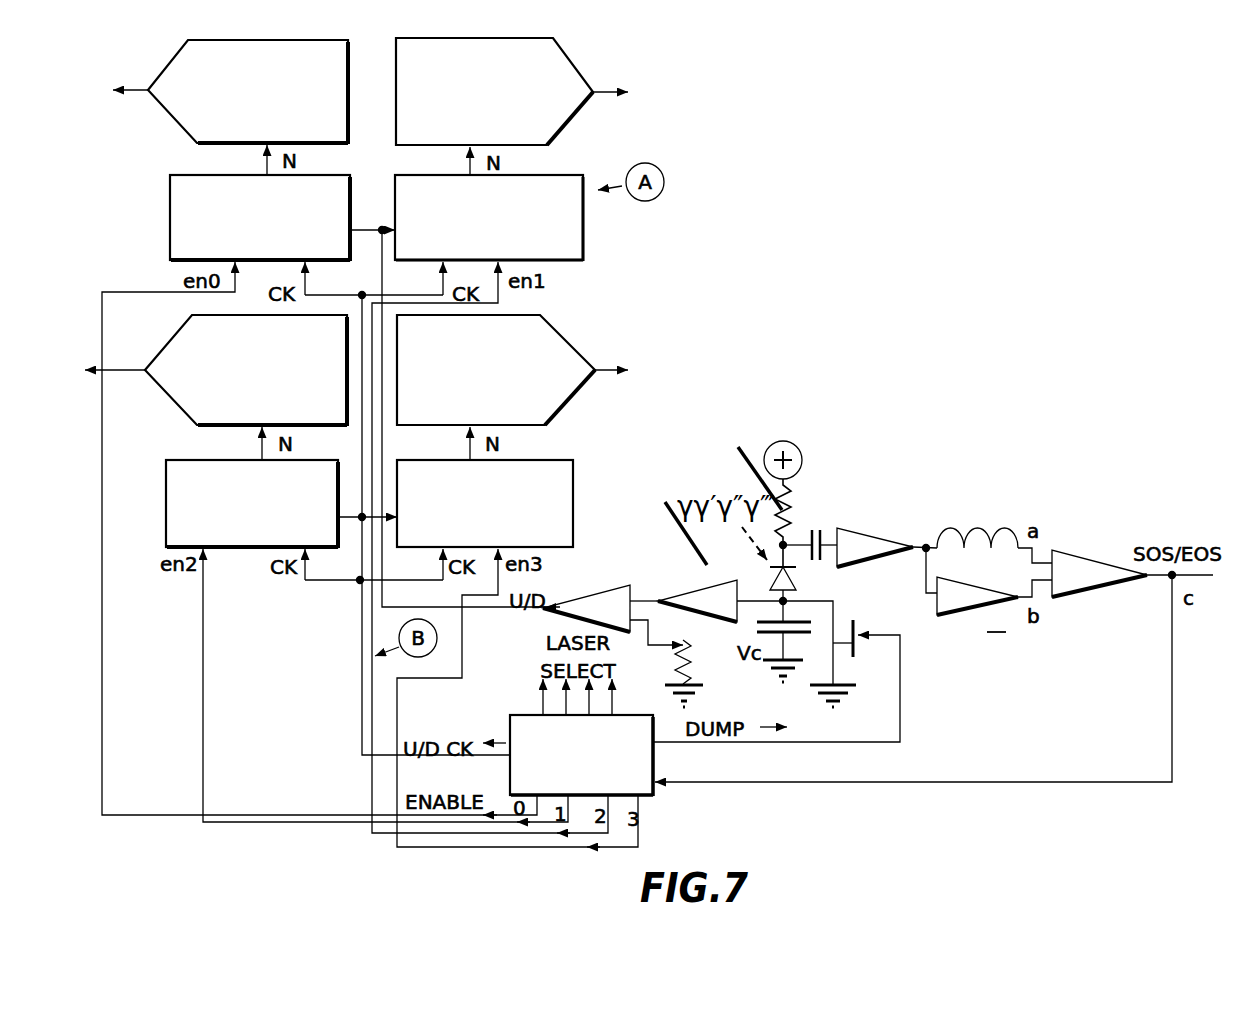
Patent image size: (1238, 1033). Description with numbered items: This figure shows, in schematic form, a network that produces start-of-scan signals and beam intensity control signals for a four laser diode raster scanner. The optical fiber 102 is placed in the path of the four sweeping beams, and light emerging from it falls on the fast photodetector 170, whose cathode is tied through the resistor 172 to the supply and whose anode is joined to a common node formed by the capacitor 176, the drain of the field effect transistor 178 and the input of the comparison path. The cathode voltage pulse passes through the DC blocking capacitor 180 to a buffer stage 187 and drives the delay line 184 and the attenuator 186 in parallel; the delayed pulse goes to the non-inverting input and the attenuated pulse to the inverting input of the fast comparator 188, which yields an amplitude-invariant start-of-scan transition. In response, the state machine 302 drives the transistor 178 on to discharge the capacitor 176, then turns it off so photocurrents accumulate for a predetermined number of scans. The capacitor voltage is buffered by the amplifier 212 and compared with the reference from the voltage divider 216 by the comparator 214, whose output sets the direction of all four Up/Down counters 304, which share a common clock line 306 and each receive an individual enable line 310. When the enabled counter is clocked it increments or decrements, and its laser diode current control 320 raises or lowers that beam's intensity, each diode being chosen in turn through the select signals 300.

The optical fiber 102 is at (688, 540).
The photodetector 170 is at (774, 580).
The resistor 172 is at (790, 508).
The capacitor 176 is at (802, 620).
The field effect transistor 178 is at (848, 627).
The DC blocking capacitor 180 is at (822, 531).
The delay line 184 is at (984, 528).
The attenuator 186 is at (983, 593).
The amplifier 187 is at (868, 540).
The fast comparator 188 is at (1093, 568).
The buffer amplifier 212 is at (692, 598).
The comparator 214 is at (590, 598).
The voltage divider 216 is at (692, 669).
The select signals 300 is at (613, 692).
The state machine 302 is at (655, 795).
The Up/Down counter 304 is at (177, 221).
The up/down clock line 306 is at (361, 668).
The enable line 310 is at (457, 847).
The laser diode current control 320 is at (573, 115).